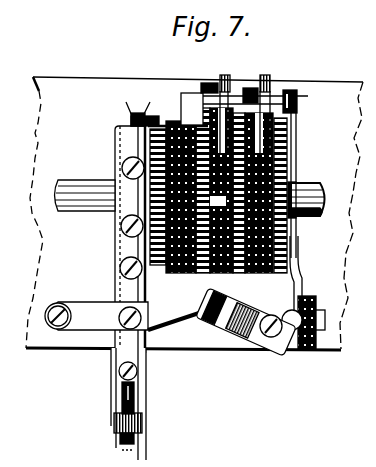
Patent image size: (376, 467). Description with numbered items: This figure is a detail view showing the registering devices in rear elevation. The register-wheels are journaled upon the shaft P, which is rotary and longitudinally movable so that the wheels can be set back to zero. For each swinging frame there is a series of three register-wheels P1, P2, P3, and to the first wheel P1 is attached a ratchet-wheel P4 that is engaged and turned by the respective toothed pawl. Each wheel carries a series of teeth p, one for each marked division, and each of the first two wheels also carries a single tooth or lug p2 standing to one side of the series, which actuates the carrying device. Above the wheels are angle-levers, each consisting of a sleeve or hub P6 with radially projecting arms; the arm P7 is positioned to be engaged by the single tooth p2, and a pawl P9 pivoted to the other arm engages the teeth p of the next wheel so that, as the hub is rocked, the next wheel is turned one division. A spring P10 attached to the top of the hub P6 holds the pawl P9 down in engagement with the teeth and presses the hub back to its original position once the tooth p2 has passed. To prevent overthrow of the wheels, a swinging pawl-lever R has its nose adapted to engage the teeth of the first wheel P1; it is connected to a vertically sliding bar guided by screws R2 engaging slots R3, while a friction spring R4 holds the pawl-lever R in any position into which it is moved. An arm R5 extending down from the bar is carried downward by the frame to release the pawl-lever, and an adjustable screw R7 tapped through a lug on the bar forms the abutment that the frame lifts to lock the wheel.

The shaft P is at (70, 172).
The register-wheel P1 is at (166, 266).
The register-wheel P2 is at (213, 265).
The register-wheel P3 is at (285, 254).
The ratchet-wheel P4 is at (136, 198).
The sleeve or hub P6 is at (252, 92).
The arm P7 is at (208, 108).
The pawl P9 is at (277, 134).
The spring P10 is at (222, 72).
The teeth p is at (228, 268).
The single tooth or lug p2 is at (184, 116).
The pawl-lever R is at (128, 323).
The screw R2 is at (112, 260).
The slot R3 is at (118, 275).
The spring R4 is at (246, 322).
The arm R5 is at (114, 443).
The screw R7 is at (128, 398).